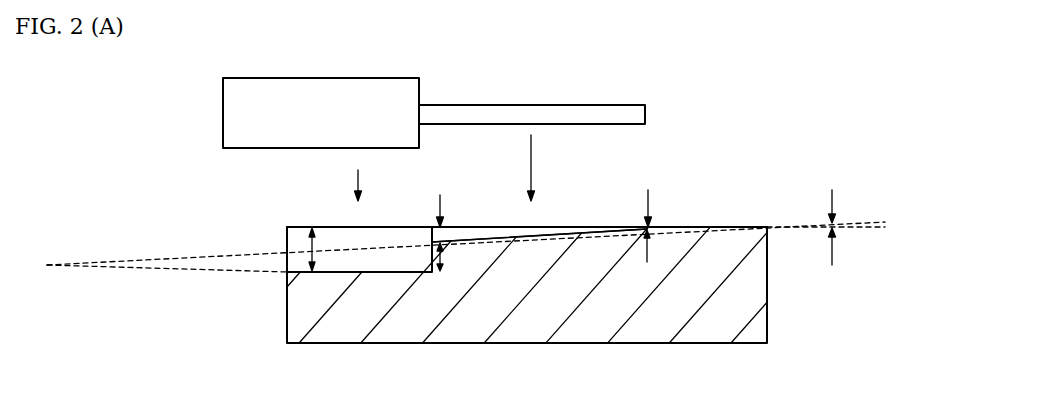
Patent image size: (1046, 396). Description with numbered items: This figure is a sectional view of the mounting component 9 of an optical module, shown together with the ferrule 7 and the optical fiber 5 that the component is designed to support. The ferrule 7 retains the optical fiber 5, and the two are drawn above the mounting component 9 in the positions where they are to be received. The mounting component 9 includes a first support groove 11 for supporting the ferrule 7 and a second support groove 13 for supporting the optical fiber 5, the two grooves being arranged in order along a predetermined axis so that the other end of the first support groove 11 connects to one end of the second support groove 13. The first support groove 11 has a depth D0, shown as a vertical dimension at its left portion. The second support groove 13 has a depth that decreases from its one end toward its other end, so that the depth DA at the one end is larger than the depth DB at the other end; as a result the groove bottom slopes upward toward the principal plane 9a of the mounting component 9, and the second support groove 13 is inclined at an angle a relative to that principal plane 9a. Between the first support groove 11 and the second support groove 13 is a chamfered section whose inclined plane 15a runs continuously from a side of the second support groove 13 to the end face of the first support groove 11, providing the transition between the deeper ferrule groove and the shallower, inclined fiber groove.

The ferrule 7 is at (382, 76).
The optical fiber 5 is at (467, 105).
The mounting component 9 is at (287, 322).
The principal plane 9a is at (660, 228).
The first support groove 11 is at (378, 225).
The second support groove 13 is at (548, 225).
The inclined plane 15a is at (443, 227).
The angle a is at (835, 226).
The depth of the first support groove D0 is at (313, 221).
The depth at the one end of the second support groove DA is at (452, 276).
The depth at the other end of the second support groove DB is at (648, 263).